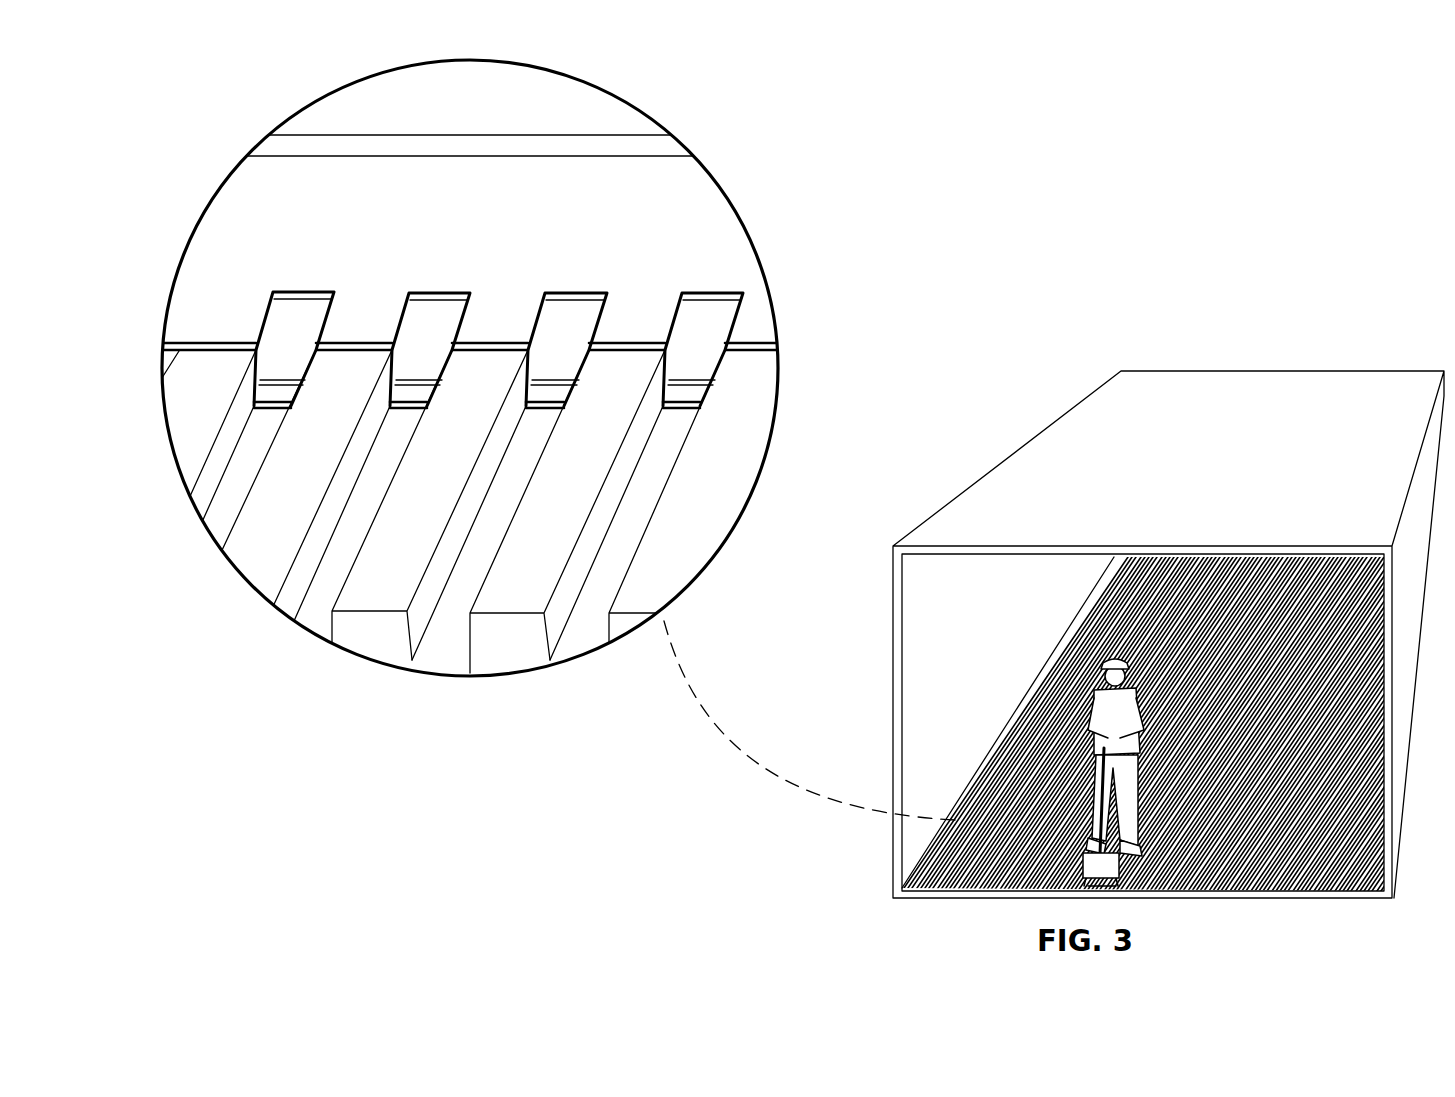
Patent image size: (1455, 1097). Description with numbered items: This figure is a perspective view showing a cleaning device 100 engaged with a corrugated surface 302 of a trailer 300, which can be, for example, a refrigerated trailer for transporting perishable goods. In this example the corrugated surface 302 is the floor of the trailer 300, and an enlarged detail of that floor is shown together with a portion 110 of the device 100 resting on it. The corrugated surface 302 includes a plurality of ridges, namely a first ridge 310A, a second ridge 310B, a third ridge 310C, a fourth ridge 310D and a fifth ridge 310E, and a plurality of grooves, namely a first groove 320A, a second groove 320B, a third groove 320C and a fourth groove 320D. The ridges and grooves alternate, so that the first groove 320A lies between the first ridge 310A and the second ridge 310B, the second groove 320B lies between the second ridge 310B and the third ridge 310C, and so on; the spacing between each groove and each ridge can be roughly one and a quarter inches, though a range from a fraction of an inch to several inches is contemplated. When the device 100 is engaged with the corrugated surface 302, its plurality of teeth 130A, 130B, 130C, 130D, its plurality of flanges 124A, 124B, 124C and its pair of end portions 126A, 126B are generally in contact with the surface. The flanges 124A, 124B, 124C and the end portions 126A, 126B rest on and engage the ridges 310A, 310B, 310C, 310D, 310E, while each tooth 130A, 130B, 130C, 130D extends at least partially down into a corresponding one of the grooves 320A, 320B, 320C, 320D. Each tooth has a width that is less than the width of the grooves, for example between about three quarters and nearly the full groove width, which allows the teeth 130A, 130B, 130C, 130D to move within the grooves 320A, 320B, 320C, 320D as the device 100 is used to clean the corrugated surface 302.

The device 100 is at (933, 661).
The soil layer 110 is at (358, 91).
The flange 124A is at (371, 322).
The flange 124B is at (498, 323).
The flange 124C is at (638, 323).
The end portion 126A is at (211, 315).
The end portion 126B is at (764, 317).
The tooth 130A is at (290, 323).
The tooth 130B is at (427, 323).
The tooth 130C is at (559, 323).
The tooth 130D is at (696, 323).
The trailer 300 is at (1352, 320).
The corrugated surface 302 is at (712, 451).
The first ridge 310A is at (183, 415).
The second ridge 310B is at (266, 560).
The third ridge 310C is at (384, 593).
The fourth ridge 310D is at (514, 598).
The fifth ridge 310E is at (674, 568).
The first groove 320A is at (219, 518).
The second groove 320B is at (319, 625).
The third groove 320C is at (449, 652).
The fourth groove 320D is at (591, 640).